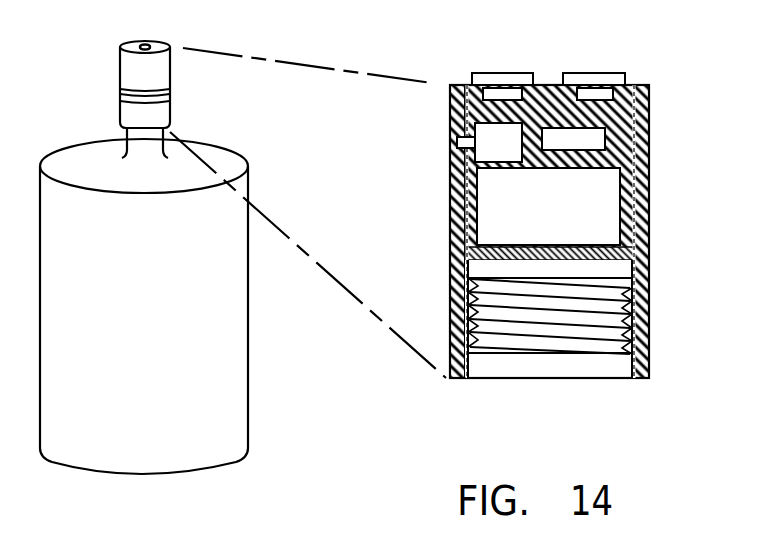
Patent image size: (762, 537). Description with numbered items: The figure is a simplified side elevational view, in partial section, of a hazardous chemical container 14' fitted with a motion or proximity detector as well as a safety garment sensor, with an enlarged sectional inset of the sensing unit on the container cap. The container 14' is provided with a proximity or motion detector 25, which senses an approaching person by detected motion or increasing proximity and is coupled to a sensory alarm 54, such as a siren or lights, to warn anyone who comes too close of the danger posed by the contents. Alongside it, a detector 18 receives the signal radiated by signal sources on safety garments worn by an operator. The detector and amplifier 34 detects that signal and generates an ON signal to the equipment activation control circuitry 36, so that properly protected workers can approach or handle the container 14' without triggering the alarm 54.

The container 14' is at (180, 257).
The proximity or motion detector 25 is at (503, 79).
The detector 18 is at (592, 78).
The equipment activation control circuitry 36 is at (457, 142).
The sensory alarm 54 is at (605, 140).
The detector and amplifier 34 is at (613, 213).